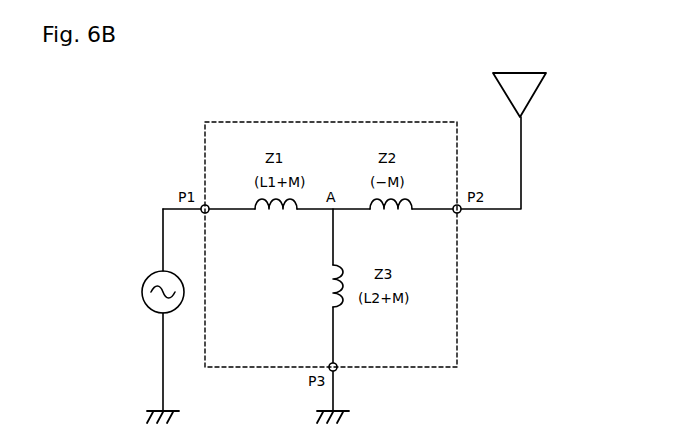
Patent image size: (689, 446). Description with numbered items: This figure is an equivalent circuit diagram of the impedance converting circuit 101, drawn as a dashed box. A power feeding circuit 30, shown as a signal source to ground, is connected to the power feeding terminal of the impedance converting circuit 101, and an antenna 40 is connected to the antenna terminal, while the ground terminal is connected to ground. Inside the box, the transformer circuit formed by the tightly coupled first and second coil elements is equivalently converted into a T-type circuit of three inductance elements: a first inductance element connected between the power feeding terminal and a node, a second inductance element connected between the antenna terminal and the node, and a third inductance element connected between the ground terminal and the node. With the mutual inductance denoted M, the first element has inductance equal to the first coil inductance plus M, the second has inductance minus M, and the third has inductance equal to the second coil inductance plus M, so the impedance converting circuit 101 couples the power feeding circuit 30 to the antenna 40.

The impedance converting circuit 101 is at (335, 122).
The power feeding circuit 30 is at (142, 292).
The antenna 40 is at (520, 73).